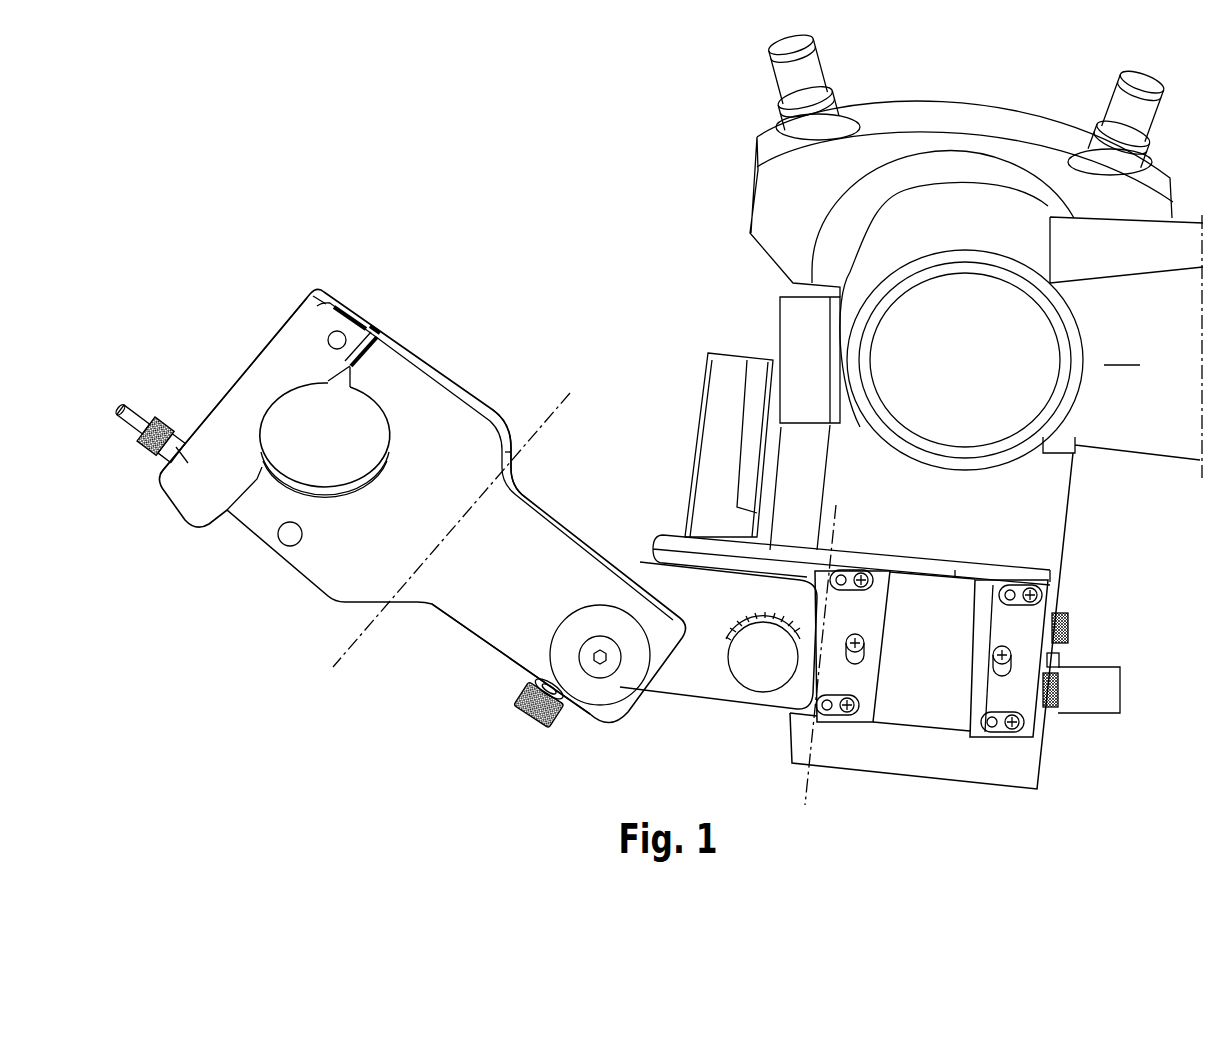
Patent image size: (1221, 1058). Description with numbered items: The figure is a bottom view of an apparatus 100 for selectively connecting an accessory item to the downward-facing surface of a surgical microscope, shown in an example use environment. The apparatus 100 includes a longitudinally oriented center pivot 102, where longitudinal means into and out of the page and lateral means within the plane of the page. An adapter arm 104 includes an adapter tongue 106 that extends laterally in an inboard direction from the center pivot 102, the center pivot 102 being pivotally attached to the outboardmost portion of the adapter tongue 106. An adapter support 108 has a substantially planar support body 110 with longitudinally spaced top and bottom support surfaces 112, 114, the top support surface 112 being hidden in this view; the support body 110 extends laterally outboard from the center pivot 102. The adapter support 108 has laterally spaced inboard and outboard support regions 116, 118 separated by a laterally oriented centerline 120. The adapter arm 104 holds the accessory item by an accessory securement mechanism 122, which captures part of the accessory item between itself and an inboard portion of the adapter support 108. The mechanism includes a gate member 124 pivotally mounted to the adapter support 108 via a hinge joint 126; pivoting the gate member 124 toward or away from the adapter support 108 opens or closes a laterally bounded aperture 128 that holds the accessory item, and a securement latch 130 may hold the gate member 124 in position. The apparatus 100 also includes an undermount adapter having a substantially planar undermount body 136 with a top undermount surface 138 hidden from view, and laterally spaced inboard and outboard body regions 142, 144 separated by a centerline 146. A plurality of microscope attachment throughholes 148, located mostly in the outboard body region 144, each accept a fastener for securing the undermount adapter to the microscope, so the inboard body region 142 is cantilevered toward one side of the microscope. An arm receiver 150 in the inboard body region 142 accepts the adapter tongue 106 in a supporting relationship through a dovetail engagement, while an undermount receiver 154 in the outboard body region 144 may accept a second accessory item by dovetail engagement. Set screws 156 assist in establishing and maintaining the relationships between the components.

The apparatus 100 is at (414, 690).
The center pivot 102 is at (596, 640).
The adapter arm 104 is at (257, 600).
The adapter tongue 106 is at (693, 660).
The adapter support 108 is at (466, 425).
The support body 110 is at (510, 595).
The top support surface 112 is at (528, 512).
The bottom support surface 114 is at (400, 405).
The inboard support region 116 is at (653, 725).
The outboard support region 118 is at (200, 543).
The centerline 120 is at (547, 423).
The accessory securement mechanism 122 is at (333, 278).
The gate member 124 is at (287, 365).
The hinge joint 126 is at (366, 312).
The laterally bounded aperture 128 is at (314, 459).
The securement latch 130 is at (150, 488).
The undermount body 136 is at (852, 680).
The top undermount surface 138 is at (717, 540).
The inboard body region 142 is at (760, 735).
The outboard body region 144 is at (913, 752).
The centerline 146 is at (804, 803).
The microscope attachment throughholes 148 is at (838, 576).
The arm receiver 150 is at (772, 560).
The undermount receiver 154 is at (938, 690).
The set screws 156 is at (161, 413).